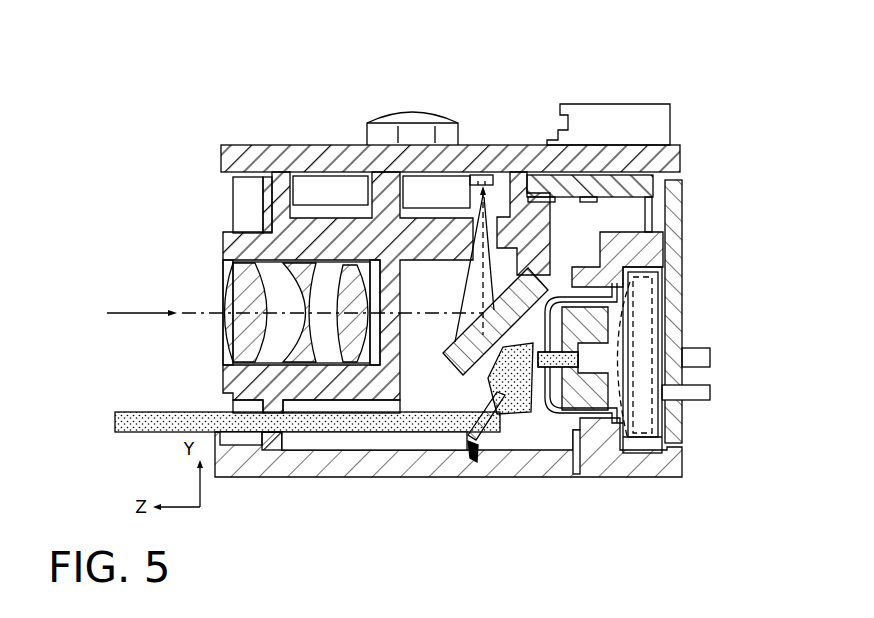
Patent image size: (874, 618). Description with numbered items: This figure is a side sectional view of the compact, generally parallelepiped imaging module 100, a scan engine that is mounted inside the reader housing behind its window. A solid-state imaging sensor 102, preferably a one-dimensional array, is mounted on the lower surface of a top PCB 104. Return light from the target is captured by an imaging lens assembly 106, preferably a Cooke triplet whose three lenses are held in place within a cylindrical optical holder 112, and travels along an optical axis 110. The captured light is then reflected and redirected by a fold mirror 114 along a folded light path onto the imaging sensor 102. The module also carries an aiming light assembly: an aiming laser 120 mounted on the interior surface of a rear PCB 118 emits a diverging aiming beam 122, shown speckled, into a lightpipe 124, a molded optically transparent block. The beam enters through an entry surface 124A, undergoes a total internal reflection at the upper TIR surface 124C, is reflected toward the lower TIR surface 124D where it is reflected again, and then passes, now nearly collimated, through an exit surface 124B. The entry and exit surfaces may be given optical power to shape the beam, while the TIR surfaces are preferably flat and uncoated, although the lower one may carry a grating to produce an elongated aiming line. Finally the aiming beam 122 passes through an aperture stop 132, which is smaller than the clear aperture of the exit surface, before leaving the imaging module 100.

The imaging module 100 is at (693, 71).
The imaging sensor 102 is at (481, 175).
The top PCB 104 is at (310, 150).
The imaging lens assembly 106 is at (221, 306).
The optical axis 110 is at (150, 313).
The cylindrical optical holder 112 is at (238, 247).
The fold mirror 114 is at (548, 292).
The rear PCB 118 is at (673, 212).
The aiming laser 120 is at (636, 334).
The aiming beam 122 is at (168, 413).
The lightpipe 124 is at (478, 452).
The entry surface 124A is at (537, 412).
The exit surface 124B is at (466, 447).
The upper total internal reflecting surface 124C is at (484, 378).
The lower total internal reflecting surface 124D is at (532, 403).
The aperture stop 132 is at (277, 478).